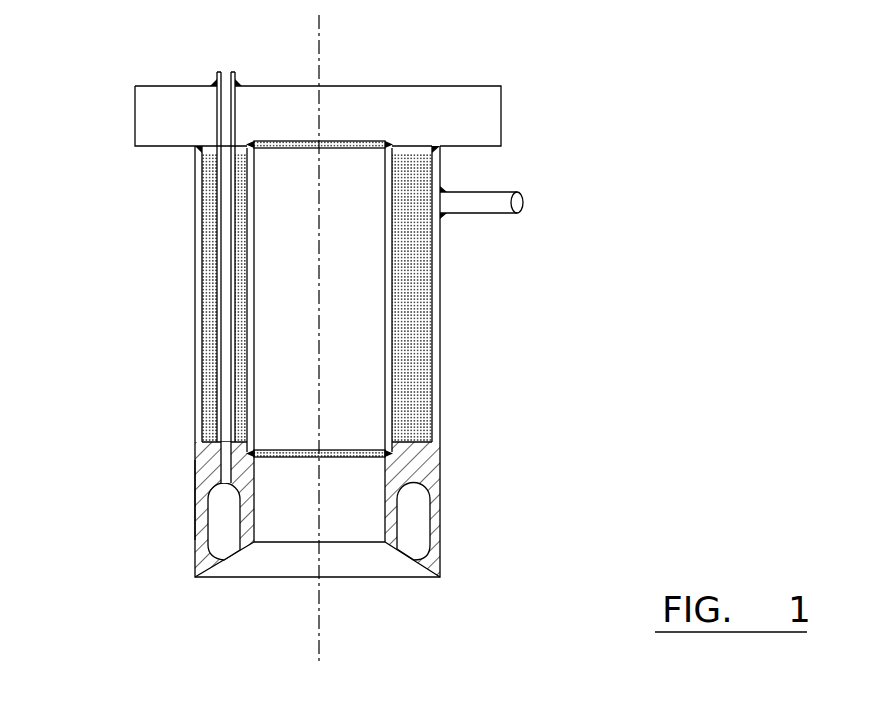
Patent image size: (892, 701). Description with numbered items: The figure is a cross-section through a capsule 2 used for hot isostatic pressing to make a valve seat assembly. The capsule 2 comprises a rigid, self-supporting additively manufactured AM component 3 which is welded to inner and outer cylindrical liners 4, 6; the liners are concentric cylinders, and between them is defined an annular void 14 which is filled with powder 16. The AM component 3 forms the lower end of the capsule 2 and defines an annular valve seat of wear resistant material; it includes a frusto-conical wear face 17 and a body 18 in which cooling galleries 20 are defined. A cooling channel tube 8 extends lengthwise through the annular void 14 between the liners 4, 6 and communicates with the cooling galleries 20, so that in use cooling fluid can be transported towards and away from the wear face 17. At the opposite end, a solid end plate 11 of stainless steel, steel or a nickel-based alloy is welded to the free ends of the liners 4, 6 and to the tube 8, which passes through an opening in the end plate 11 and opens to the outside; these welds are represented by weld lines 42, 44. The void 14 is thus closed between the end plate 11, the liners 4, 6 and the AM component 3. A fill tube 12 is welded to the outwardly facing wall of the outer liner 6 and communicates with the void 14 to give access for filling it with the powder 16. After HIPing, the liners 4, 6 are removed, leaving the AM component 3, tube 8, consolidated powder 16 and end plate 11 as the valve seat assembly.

The capsule 2 is at (148, 33).
The AM component 3 is at (195, 527).
The inner cylindrical liner 4 is at (248, 410).
The outer cylindrical liner 6 is at (198, 320).
The cooling channel tube 8 is at (220, 253).
The end plate 11 is at (135, 115).
The fill tube 12 is at (490, 204).
The annular void 14 is at (210, 355).
The powder 16 is at (418, 297).
The wear face 17 is at (412, 560).
The body 18 is at (433, 503).
The cooling galleries 20 is at (218, 493).
The weld line 42 is at (297, 143).
The weld line 44 is at (197, 152).